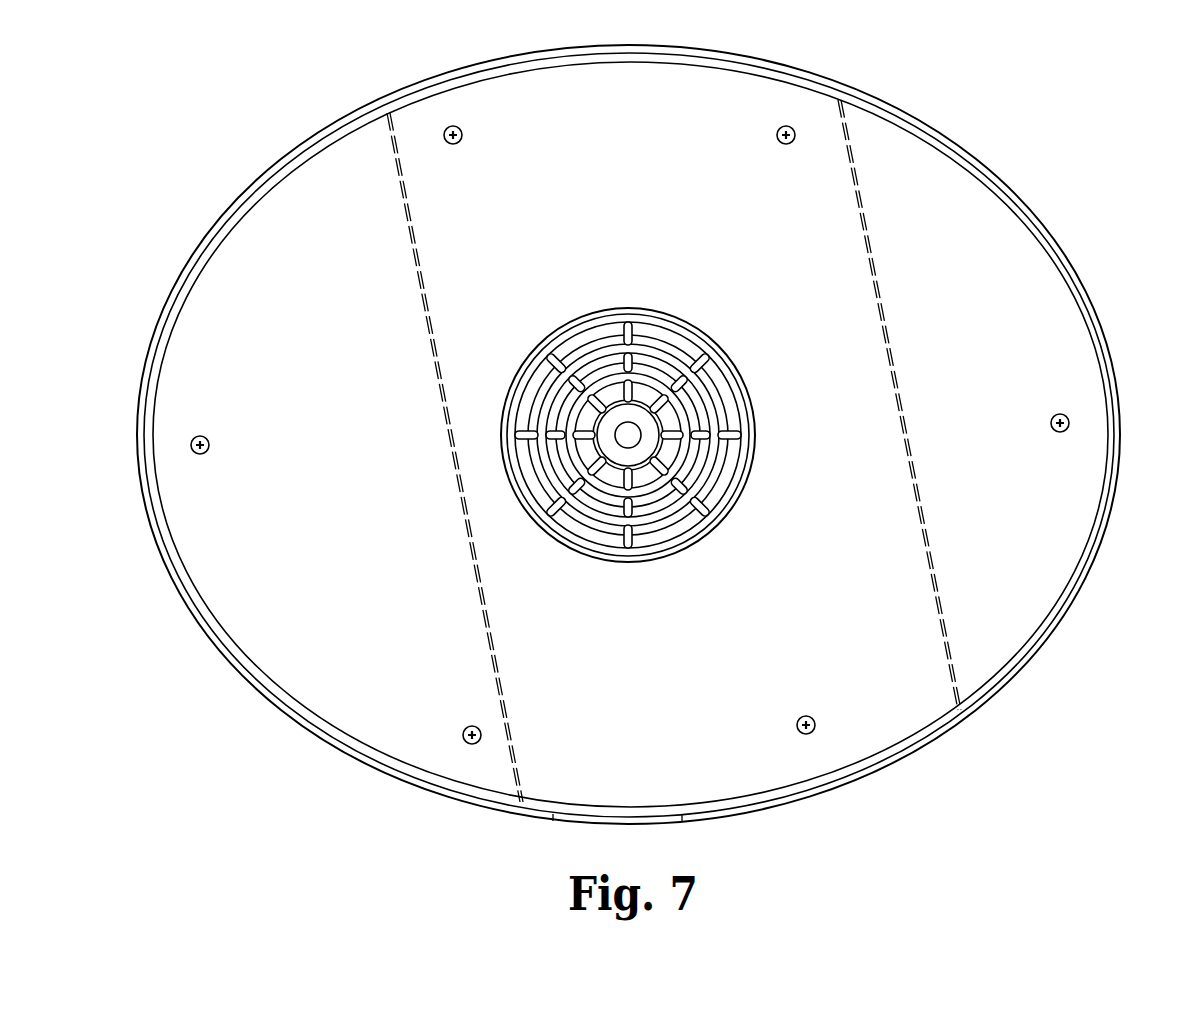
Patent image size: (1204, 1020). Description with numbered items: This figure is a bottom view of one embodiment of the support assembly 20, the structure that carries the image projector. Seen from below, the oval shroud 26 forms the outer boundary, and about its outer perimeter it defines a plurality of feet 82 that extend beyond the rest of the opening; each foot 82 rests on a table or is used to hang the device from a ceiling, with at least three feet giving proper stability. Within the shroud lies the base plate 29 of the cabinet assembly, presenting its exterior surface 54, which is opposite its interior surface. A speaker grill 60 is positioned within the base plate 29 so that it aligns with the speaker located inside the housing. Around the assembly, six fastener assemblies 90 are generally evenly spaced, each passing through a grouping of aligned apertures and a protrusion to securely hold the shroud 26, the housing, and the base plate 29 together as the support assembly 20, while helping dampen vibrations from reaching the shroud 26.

The support assembly 20 is at (186, 86).
The shroud 26 is at (1110, 505).
The base plate 29 is at (1066, 362).
The exterior surface 54 is at (1005, 620).
The speaker grill 60 is at (718, 392).
The feet 82 is at (270, 165).
The fastener assembly 90 is at (1080, 422).